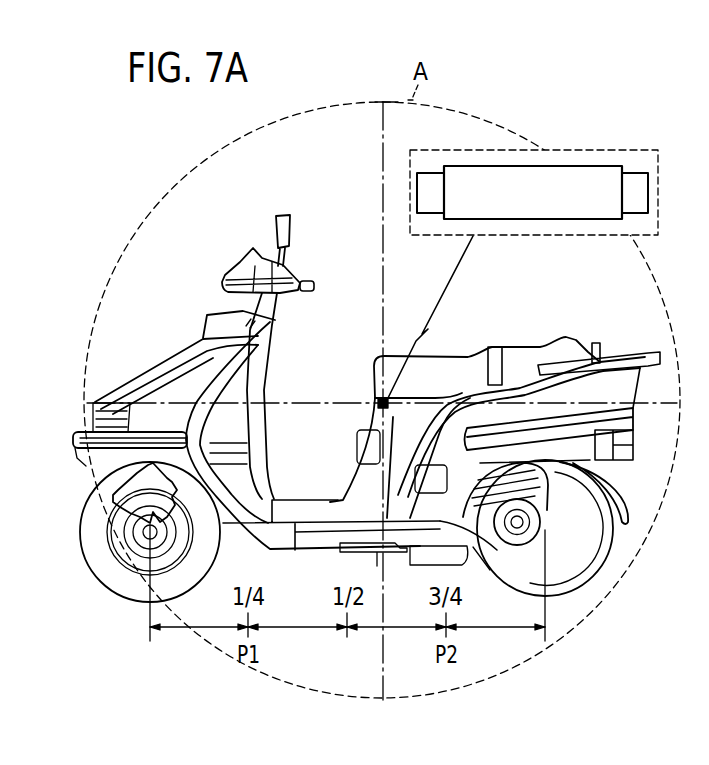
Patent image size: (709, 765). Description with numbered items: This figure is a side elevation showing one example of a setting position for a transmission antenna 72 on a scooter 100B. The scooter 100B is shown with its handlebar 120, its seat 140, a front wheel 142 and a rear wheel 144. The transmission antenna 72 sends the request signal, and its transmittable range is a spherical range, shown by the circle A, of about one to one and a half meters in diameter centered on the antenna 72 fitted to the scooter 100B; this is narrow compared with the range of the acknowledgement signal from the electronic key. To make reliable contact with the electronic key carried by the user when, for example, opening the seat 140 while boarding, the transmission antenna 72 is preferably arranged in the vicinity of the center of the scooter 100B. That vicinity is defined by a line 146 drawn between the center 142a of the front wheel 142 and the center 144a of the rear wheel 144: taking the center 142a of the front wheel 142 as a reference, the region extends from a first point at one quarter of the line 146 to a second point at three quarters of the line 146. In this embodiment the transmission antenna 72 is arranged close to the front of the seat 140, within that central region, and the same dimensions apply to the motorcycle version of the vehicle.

The transmission antenna 72 is at (568, 221).
The scooter 100B is at (205, 311).
The handlebar 120 is at (304, 296).
The seat 140 is at (466, 357).
The front wheel 142 is at (99, 560).
The center of the front wheel 142a is at (145, 493).
The rear wheel 144 is at (512, 570).
The center of the rear wheel 144a is at (540, 527).
The line between the wheel centers 146 is at (205, 614).